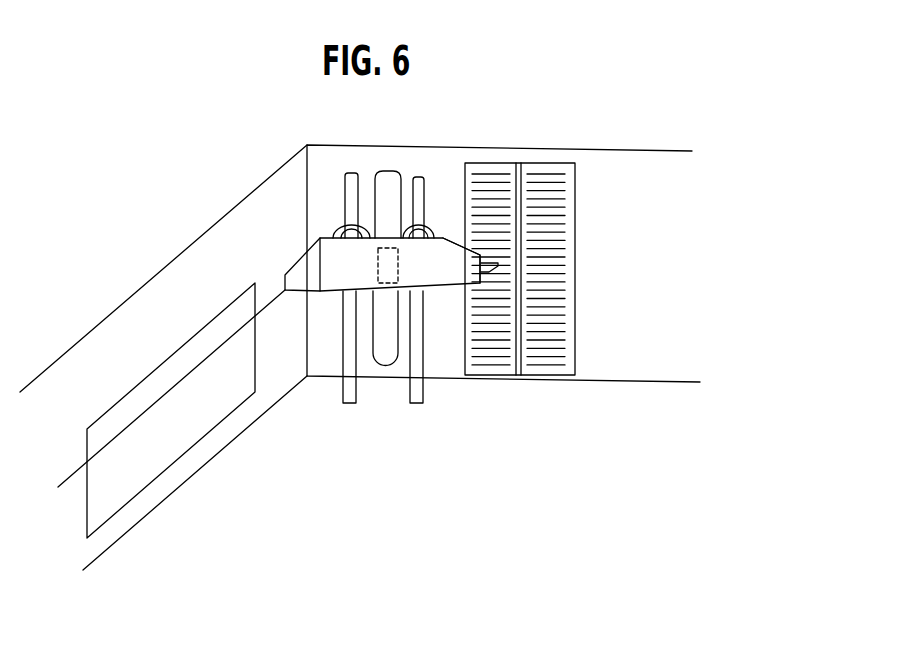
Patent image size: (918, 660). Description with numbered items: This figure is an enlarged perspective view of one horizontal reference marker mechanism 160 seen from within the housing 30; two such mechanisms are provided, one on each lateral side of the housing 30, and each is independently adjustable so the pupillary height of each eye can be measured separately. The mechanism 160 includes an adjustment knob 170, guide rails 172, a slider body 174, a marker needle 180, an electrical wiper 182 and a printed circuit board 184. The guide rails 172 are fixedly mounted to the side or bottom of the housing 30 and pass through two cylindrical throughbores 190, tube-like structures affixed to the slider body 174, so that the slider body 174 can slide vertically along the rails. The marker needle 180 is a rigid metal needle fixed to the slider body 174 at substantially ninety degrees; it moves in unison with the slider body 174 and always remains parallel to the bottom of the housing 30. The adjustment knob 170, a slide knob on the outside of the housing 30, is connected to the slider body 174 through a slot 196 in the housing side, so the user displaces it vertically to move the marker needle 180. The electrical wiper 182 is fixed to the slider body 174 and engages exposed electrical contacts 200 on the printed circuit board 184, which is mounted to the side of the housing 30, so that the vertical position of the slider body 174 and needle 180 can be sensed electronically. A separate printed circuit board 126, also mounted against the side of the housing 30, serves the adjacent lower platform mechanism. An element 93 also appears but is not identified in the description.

The housing 30 is at (210, 229).
The rear panel 93 is at (670, 165).
The printed circuit board 126 is at (566, 165).
The horizontal reference marker mechanism 160 is at (477, 442).
The adjustment knob 170 is at (390, 273).
The guide rails 172 is at (346, 193).
The slider body 174 is at (437, 284).
The marker needle 180 is at (167, 395).
The electrical wiper 182 is at (490, 273).
The printed circuit board 184 is at (493, 173).
The cylindrical throughbores 190 is at (332, 230).
The slot 196 is at (388, 170).
The exposed electrical contacts 200 is at (507, 218).